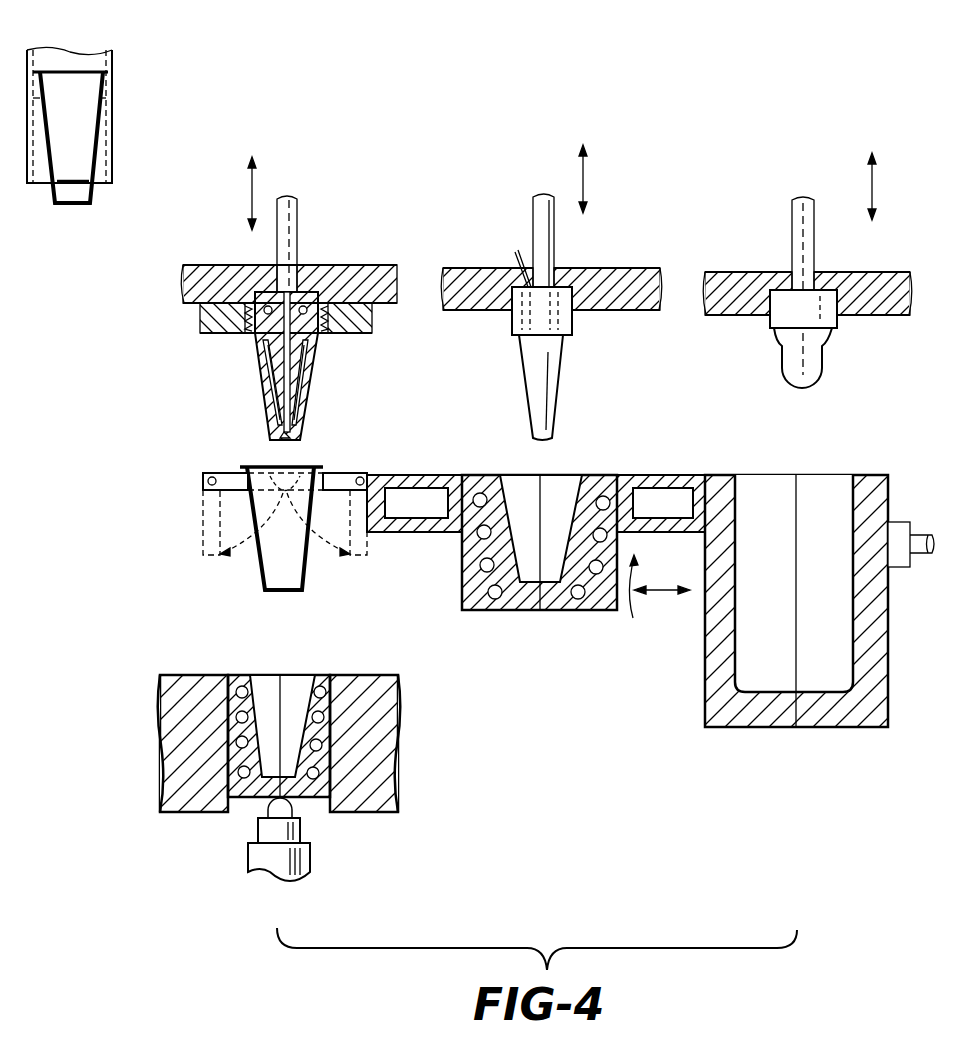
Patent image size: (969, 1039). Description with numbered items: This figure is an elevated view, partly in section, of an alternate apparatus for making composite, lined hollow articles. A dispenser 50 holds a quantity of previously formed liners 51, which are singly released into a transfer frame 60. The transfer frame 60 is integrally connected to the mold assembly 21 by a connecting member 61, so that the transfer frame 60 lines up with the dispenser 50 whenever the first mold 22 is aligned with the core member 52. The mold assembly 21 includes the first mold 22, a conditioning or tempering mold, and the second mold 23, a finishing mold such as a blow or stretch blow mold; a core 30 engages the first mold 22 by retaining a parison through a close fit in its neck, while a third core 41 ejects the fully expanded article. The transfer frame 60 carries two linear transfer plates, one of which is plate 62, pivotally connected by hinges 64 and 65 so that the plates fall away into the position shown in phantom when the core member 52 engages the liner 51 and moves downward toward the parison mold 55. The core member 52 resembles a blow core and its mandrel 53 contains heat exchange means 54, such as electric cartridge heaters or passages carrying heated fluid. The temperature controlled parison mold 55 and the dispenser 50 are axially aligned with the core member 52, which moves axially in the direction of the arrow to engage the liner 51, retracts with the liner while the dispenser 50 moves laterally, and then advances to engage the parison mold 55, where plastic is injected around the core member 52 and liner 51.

The dispenser 50 is at (112, 112).
The liner 51 is at (100, 154).
The core member 52 is at (308, 410).
The mandrel 53 is at (308, 366).
The heat exchange means 54 is at (268, 378).
The core 30 is at (558, 389).
The third core 41 is at (830, 362).
The transfer frame 60 is at (340, 470).
The connecting member 61 is at (444, 475).
The linear transfer plate 62 is at (228, 473).
The hinge 64 is at (206, 471).
The hinge 65 is at (365, 471).
The first mold 22 is at (513, 608).
The mold assembly 21 is at (644, 604).
The second mold 23 is at (755, 712).
The parison mold 55 is at (240, 675).